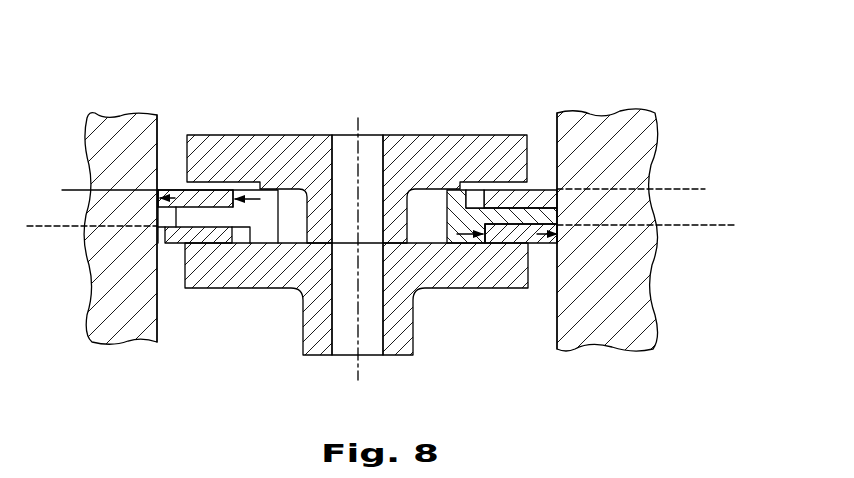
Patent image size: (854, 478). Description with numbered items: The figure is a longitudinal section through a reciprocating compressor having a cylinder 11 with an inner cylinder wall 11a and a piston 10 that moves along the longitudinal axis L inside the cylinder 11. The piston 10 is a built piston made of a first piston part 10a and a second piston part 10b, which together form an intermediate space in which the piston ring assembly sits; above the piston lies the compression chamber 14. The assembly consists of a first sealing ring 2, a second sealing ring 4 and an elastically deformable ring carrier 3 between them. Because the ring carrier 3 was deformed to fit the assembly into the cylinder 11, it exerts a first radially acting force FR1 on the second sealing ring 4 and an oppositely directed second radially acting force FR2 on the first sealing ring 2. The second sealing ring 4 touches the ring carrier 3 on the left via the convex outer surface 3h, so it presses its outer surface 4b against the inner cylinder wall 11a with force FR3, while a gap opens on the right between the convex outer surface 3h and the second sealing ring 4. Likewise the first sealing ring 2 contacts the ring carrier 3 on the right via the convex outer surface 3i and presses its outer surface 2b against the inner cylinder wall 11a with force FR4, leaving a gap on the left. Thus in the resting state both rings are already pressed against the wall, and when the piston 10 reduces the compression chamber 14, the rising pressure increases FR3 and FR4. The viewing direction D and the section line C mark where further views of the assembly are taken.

The first sealing ring 2 is at (207, 243).
The outer surface of the first sealing ring 2b is at (563, 239).
The ring carrier 3 is at (262, 243).
The convex outer surface 3h is at (231, 191).
The convex outer surface 3i is at (246, 231).
The second sealing ring 4 is at (160, 222).
The outer surface of the second sealing ring 4b is at (157, 189).
The piston 10 is at (356, 185).
The first piston part 10a is at (455, 152).
The second piston part 10b is at (470, 277).
The cylinder 11 is at (107, 220).
The inner cylinder wall 11a is at (159, 121).
The compression chamber 14 is at (340, 114).
The longitudinal axis L is at (358, 118).
The line of intersection C- C is at (37, 225).
The direction of view D- D is at (72, 189).
The first radially acting force FR1 is at (261, 196).
The second radially acting force FR2 is at (459, 243).
The force FR3 is at (160, 244).
The force FR4 is at (567, 237).